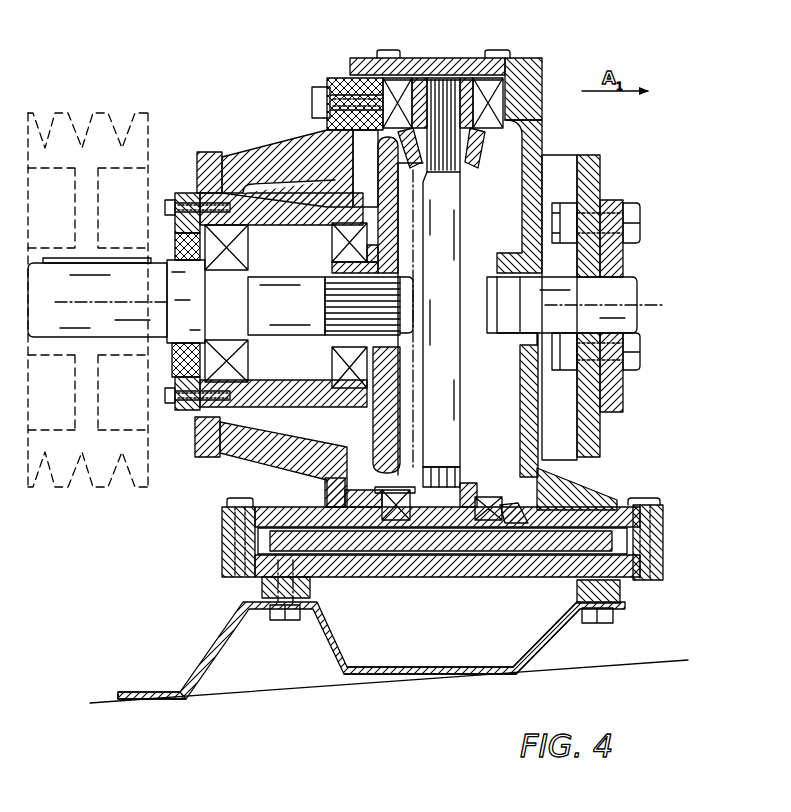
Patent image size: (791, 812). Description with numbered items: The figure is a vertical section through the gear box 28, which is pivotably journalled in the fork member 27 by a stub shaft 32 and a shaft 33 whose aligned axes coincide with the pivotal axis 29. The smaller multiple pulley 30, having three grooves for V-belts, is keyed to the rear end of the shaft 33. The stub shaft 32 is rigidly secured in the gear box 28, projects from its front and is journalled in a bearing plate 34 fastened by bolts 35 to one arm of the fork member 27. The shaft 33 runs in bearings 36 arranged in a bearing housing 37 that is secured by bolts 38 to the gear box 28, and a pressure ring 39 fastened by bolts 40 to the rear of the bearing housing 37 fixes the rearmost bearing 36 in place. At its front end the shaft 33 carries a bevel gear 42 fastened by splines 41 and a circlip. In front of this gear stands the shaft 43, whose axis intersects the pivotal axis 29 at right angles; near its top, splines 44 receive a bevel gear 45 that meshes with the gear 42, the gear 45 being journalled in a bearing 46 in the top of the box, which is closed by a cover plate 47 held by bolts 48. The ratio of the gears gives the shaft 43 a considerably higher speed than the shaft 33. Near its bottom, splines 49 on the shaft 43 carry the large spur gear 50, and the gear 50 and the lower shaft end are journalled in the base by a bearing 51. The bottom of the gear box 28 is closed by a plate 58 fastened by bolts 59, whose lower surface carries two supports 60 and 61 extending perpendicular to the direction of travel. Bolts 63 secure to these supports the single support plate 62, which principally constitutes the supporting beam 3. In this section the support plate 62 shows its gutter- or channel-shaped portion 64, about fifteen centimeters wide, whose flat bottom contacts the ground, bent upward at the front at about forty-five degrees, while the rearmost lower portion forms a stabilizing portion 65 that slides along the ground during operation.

The supporting beam 3 is at (233, 624).
The fork member 27 is at (562, 160).
The gear box 28 is at (271, 152).
The pivotal axis 29 is at (62, 302).
The multiple pulley 30 is at (107, 136).
The stub shaft 32 is at (622, 298).
The shaft 33 is at (50, 270).
The bearing plate 34 is at (613, 268).
The bolts 35 is at (637, 217).
The bearings 36 is at (333, 244).
The bearing housing 37 is at (302, 194).
The bolts 38 is at (312, 95).
The pressure ring 39 is at (184, 198).
The bolts 40 is at (170, 205).
The splines 41 is at (342, 297).
The bevel gear or pinion 42 is at (380, 192).
The shaft 43 is at (447, 247).
The splines 44 is at (440, 100).
The bevel gear or pinion 45 is at (481, 162).
The bearing 46 is at (484, 60).
The cover plate 47 is at (438, 70).
The bolts 48 is at (381, 57).
The splines 49 is at (446, 470).
The spur gear or pinion 50 is at (553, 548).
The bearing 51 is at (491, 490).
The plate 58 is at (222, 561).
The bolts 59 is at (243, 500).
The support 60 is at (262, 588).
The support 61 is at (620, 590).
The support plate 62 is at (578, 643).
The bolts 63 is at (590, 625).
The channel-shaped portion 64 is at (476, 653).
The stabilizing portion 65 is at (198, 666).